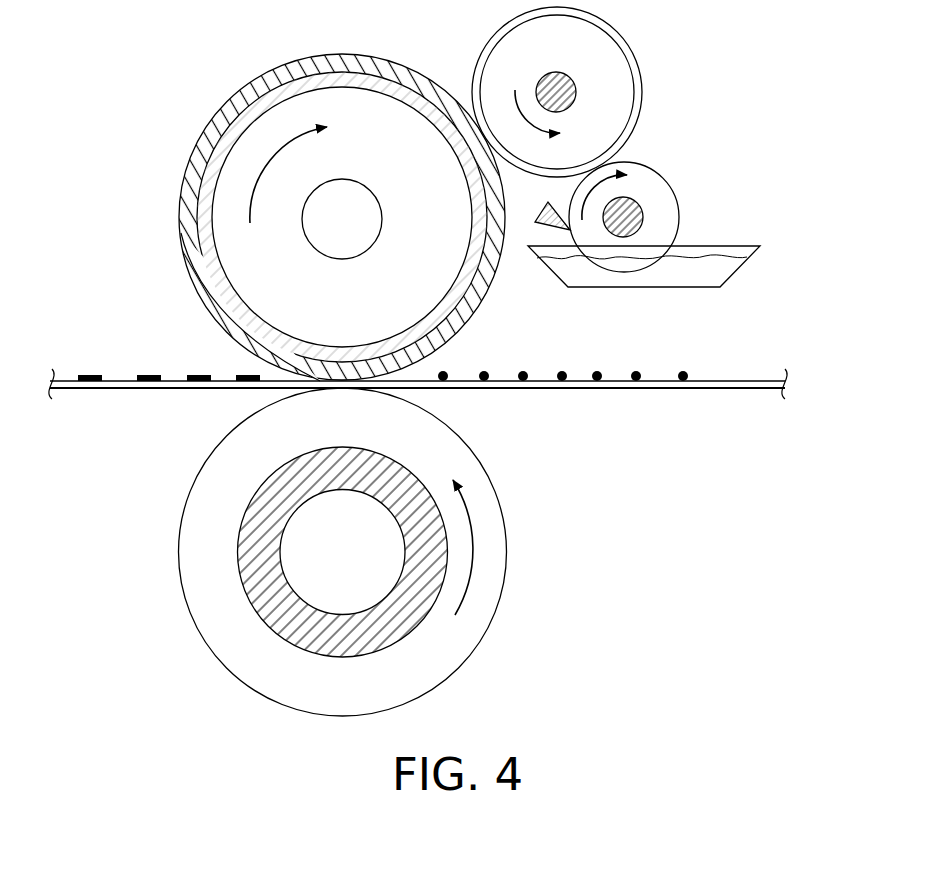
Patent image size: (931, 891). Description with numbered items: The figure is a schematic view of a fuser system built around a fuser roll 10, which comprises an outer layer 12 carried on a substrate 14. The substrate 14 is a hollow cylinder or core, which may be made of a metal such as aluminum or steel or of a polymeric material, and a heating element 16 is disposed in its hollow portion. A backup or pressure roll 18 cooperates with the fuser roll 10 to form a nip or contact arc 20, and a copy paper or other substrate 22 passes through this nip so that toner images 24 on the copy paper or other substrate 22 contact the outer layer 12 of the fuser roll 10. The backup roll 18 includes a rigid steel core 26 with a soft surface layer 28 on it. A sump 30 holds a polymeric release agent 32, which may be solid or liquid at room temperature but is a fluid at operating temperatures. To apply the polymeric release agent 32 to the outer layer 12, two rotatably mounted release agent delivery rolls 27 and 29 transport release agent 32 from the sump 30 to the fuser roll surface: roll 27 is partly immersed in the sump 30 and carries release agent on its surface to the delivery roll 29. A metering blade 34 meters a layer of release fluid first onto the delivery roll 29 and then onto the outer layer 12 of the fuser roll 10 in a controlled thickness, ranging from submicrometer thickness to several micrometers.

The fuser roll 10 is at (195, 119).
The outer layer 12 is at (280, 67).
The substrate 14 is at (358, 73).
The heating element 16 is at (361, 184).
The backup roll 18 is at (300, 552).
The nip 20 is at (317, 389).
The copy paper 22 is at (690, 389).
The toner images 24 is at (684, 372).
The rigid steel core 26 is at (257, 613).
The release agent delivery roll 27 is at (670, 187).
The soft surface layer 28 is at (430, 660).
The delivery roll 29 is at (640, 70).
The sump 30 is at (708, 268).
The polymeric release agent 32 is at (742, 268).
The metering blade 34 is at (537, 218).